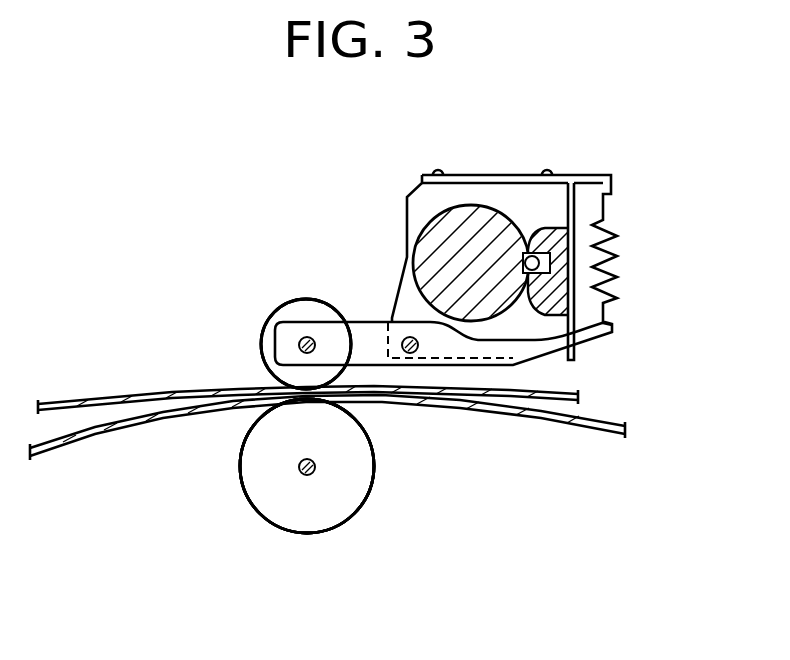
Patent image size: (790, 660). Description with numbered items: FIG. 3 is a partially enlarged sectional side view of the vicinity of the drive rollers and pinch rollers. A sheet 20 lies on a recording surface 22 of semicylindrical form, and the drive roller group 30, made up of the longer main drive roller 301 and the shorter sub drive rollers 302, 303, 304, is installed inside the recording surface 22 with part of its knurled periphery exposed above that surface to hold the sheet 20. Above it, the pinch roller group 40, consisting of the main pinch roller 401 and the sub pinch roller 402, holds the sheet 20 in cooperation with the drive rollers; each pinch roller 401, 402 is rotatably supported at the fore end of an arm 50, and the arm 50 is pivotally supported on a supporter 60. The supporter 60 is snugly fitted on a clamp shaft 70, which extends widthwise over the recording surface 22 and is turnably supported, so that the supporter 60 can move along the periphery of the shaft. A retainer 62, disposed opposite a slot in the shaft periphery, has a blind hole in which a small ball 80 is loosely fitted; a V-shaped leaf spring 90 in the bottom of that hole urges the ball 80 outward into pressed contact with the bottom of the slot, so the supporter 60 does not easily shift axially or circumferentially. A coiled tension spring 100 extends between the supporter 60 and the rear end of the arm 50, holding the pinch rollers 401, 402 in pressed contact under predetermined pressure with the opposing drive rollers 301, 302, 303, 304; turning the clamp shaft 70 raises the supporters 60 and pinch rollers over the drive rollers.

The sheet 20 is at (78, 402).
The recording surface 22 is at (590, 412).
The drive roller group 30 is at (380, 467).
The main drive roller 301 is at (307, 525).
The sub drive roller 302 is at (357, 500).
The sub drive roller 303 is at (397, 500).
The sub drive roller 304 is at (430, 500).
The pinch roller group 40 is at (266, 316).
The main pinch roller 401 is at (297, 305).
The sub pinch roller 402 is at (306, 299).
The arm 50 is at (367, 320).
The supporter 60 is at (495, 198).
The retainer 62 is at (573, 250).
The clamp shaft 70 is at (469, 223).
The small ball 80 is at (548, 262).
The leaf spring 90 is at (568, 248).
The coiled tension spring 100 is at (612, 240).